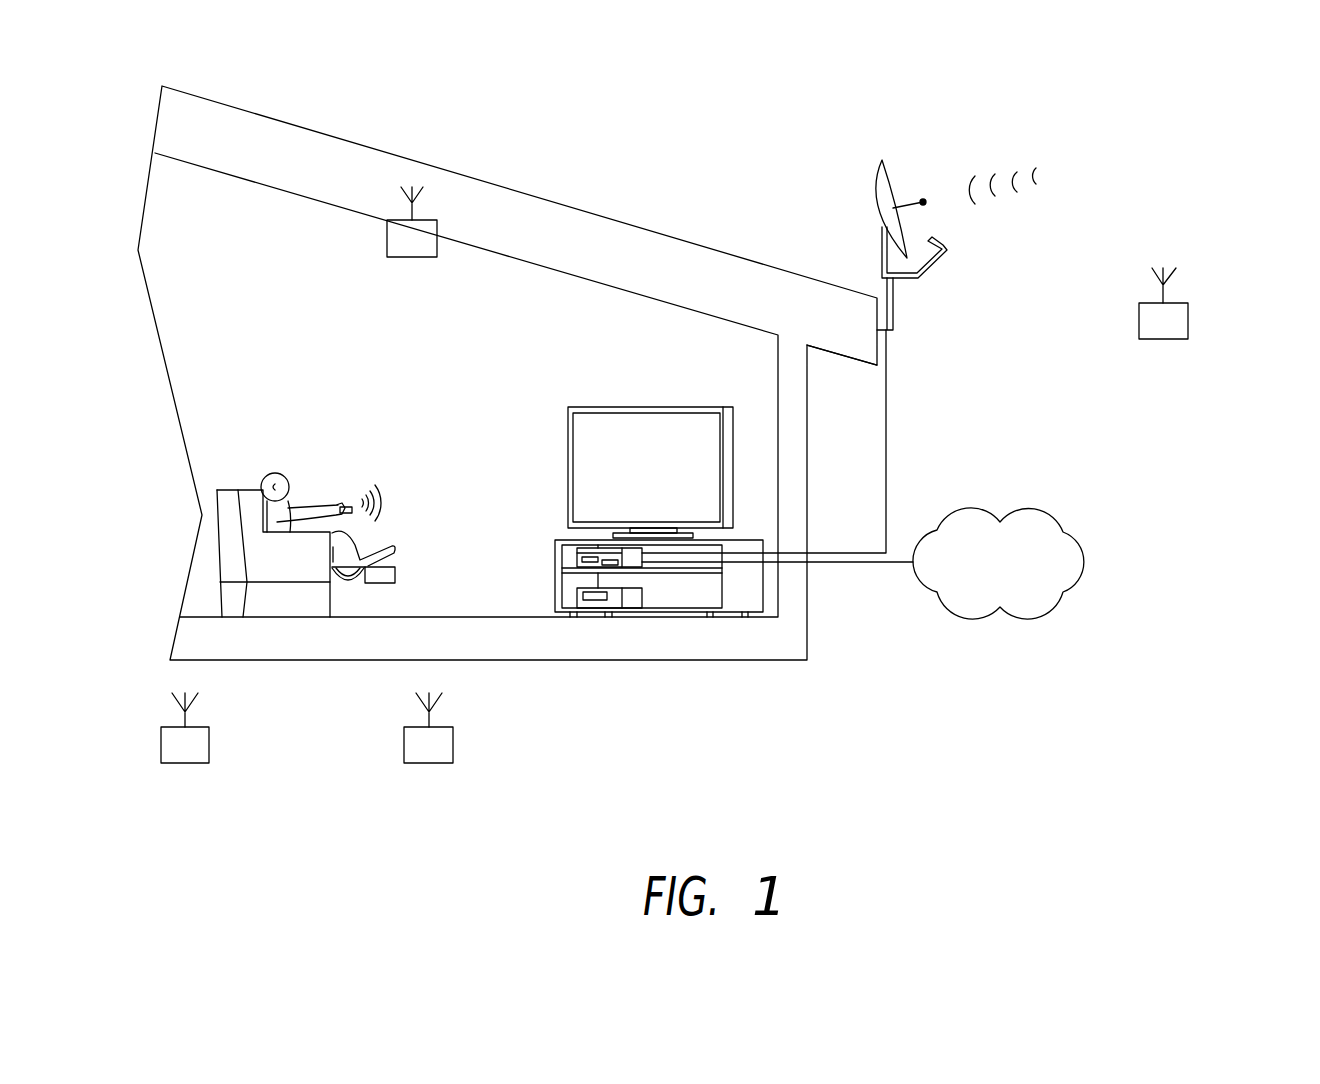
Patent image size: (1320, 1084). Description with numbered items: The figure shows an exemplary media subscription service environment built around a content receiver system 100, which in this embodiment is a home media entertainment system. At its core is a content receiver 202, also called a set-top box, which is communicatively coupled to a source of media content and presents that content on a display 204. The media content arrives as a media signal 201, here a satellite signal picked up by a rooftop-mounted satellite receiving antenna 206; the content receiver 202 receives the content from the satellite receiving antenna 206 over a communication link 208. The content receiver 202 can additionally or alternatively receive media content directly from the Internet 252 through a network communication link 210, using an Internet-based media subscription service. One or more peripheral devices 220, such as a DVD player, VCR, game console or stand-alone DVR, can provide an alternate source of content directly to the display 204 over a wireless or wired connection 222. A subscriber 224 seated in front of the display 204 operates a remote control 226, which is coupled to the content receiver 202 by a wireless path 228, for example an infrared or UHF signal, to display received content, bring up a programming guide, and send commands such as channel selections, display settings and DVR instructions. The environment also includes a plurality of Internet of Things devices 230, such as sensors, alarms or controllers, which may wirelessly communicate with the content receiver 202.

The content receiver system 100 is at (735, 140).
The media signal 201 is at (1045, 168).
The content receiver 202 is at (577, 558).
The display 204 is at (652, 407).
The satellite receiving antenna 206 is at (892, 188).
The communication link 208 is at (885, 417).
The network communication link 210 is at (862, 562).
The peripheral device 220 is at (577, 595).
The wireless or wired connection 222 is at (735, 540).
The subscriber 224 is at (275, 470).
The remote control 226 is at (343, 505).
The wireless path 228 is at (404, 488).
The Internet of Things device 230 is at (387, 240).
The Internet 252 is at (1035, 508).